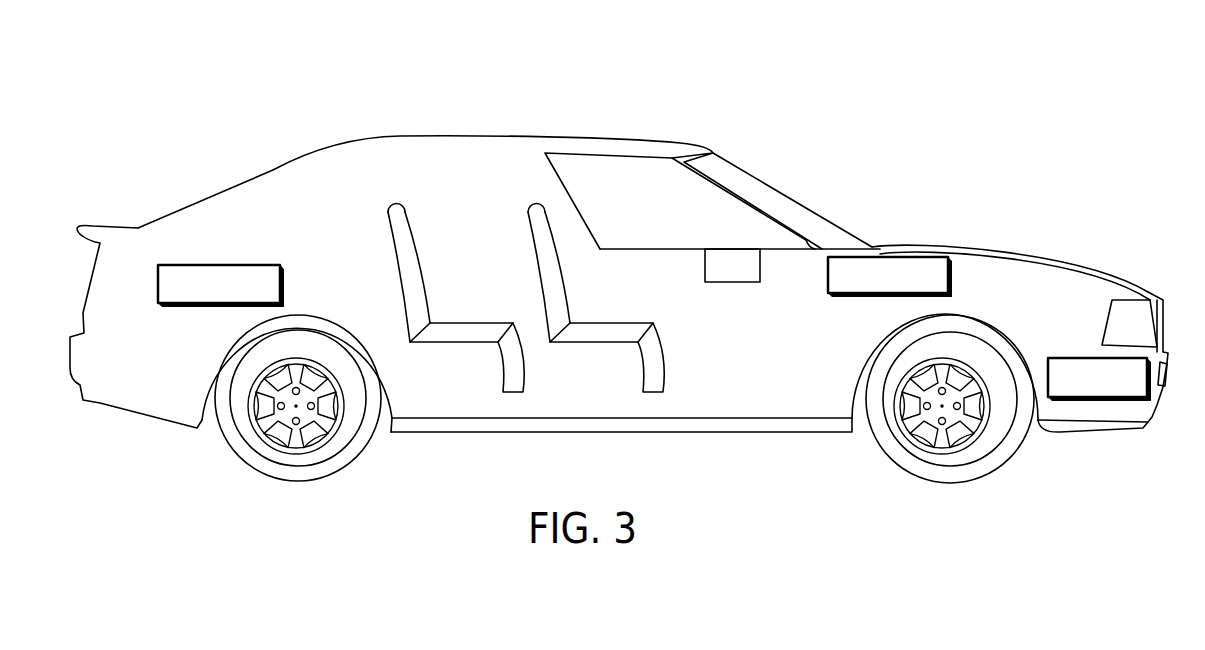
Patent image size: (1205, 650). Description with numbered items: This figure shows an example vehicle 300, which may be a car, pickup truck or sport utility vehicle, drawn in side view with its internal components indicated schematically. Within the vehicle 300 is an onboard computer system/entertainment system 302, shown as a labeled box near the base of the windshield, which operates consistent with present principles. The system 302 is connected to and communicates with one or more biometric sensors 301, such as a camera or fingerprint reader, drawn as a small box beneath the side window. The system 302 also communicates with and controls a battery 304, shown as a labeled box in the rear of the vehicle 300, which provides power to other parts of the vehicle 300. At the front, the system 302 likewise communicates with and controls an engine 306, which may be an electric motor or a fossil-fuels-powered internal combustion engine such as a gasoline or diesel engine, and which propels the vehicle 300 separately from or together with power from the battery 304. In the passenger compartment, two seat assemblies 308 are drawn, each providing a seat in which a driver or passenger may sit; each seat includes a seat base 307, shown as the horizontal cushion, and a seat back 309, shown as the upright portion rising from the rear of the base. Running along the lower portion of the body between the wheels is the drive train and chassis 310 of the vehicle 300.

The vehicle 300 is at (902, 62).
The biometric sensor 301 is at (732, 282).
The onboard computer system/entertainment system 302 is at (891, 257).
The battery 304 is at (220, 265).
The engine 306 is at (1078, 357).
The seat base 307 is at (455, 343).
The seat assembly 308 is at (388, 205).
The seat back 309 is at (424, 265).
The drive train and chassis 310 is at (786, 417).